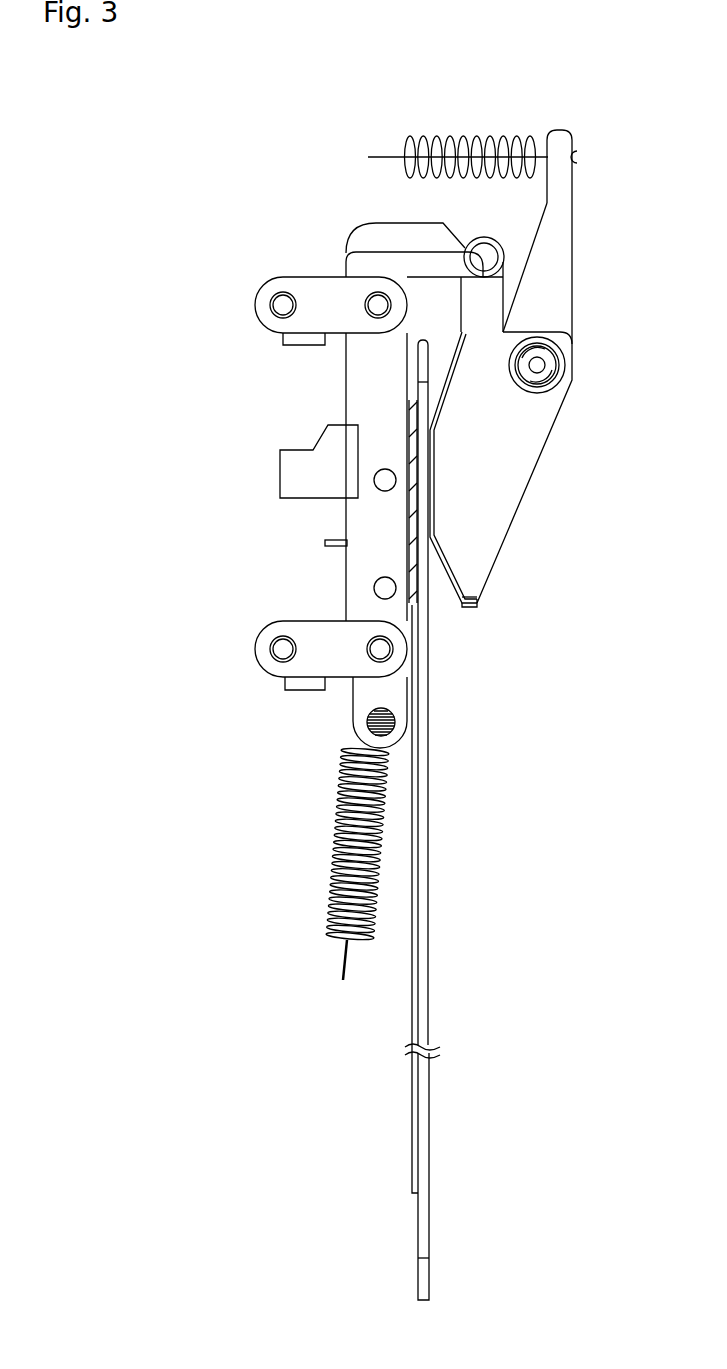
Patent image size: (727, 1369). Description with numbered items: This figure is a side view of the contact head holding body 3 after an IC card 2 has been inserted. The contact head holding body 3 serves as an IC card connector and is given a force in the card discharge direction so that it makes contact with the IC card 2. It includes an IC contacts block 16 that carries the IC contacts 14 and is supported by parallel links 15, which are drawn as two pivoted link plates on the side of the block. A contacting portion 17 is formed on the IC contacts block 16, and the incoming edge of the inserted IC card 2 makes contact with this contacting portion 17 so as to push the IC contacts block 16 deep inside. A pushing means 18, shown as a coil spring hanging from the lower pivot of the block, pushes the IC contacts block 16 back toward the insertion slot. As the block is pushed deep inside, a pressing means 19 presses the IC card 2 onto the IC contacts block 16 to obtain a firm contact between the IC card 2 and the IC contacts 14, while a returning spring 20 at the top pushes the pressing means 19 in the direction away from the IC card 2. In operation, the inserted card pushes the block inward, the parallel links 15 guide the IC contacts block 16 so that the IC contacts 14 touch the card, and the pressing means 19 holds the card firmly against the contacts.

The IC card 2 is at (423, 855).
The contact head holding body 3 is at (365, 1012).
The IC contacts 14 is at (433, 437).
The parallel links 15 is at (317, 325).
The IC contacts block 16 is at (360, 567).
The contacting portion 17 is at (474, 273).
The pushing means 18 is at (330, 883).
The pressing means 19 is at (475, 587).
The returning spring 20 is at (465, 136).